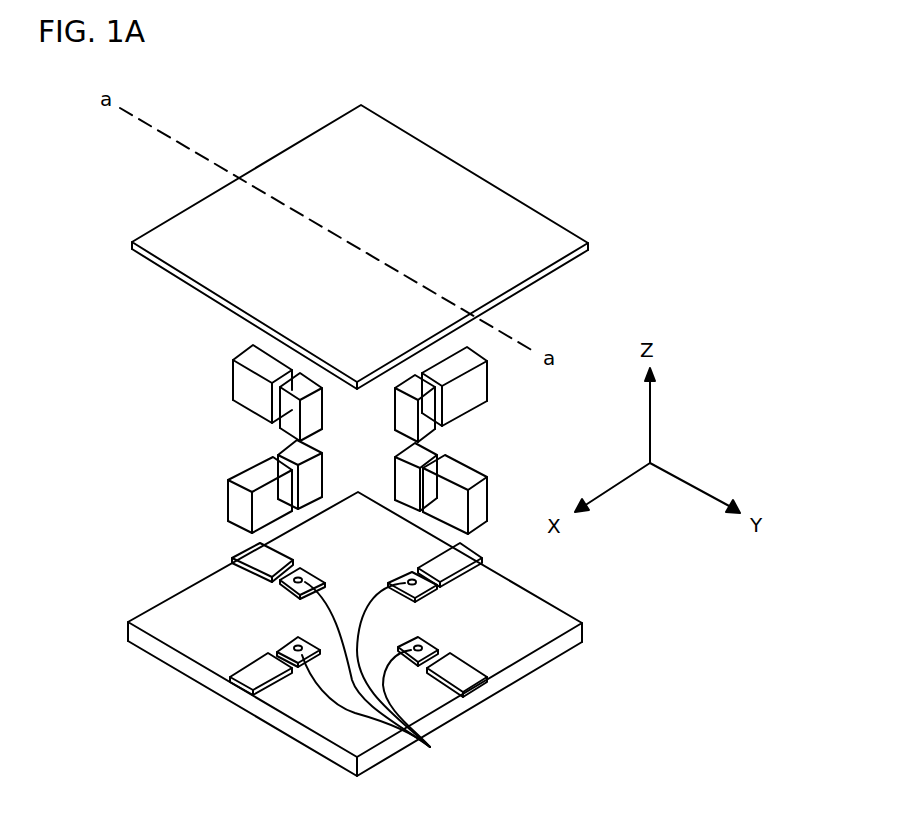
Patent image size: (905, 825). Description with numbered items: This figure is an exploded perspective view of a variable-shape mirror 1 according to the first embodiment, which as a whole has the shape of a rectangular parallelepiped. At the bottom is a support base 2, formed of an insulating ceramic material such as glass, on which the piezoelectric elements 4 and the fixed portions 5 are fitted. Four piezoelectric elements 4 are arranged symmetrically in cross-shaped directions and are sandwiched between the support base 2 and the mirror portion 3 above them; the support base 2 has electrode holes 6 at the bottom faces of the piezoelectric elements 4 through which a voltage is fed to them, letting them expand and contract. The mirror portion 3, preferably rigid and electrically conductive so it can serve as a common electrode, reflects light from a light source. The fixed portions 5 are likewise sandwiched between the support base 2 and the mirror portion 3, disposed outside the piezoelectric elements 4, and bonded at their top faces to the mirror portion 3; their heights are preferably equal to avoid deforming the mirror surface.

The variable-shape mirror 1 is at (646, 286).
The support base 2 is at (528, 647).
The mirror portion 3 is at (465, 188).
The piezoelectric elements 4 is at (407, 480).
The fixed portions 5 is at (233, 494).
The electrode holes 6 is at (372, 677).